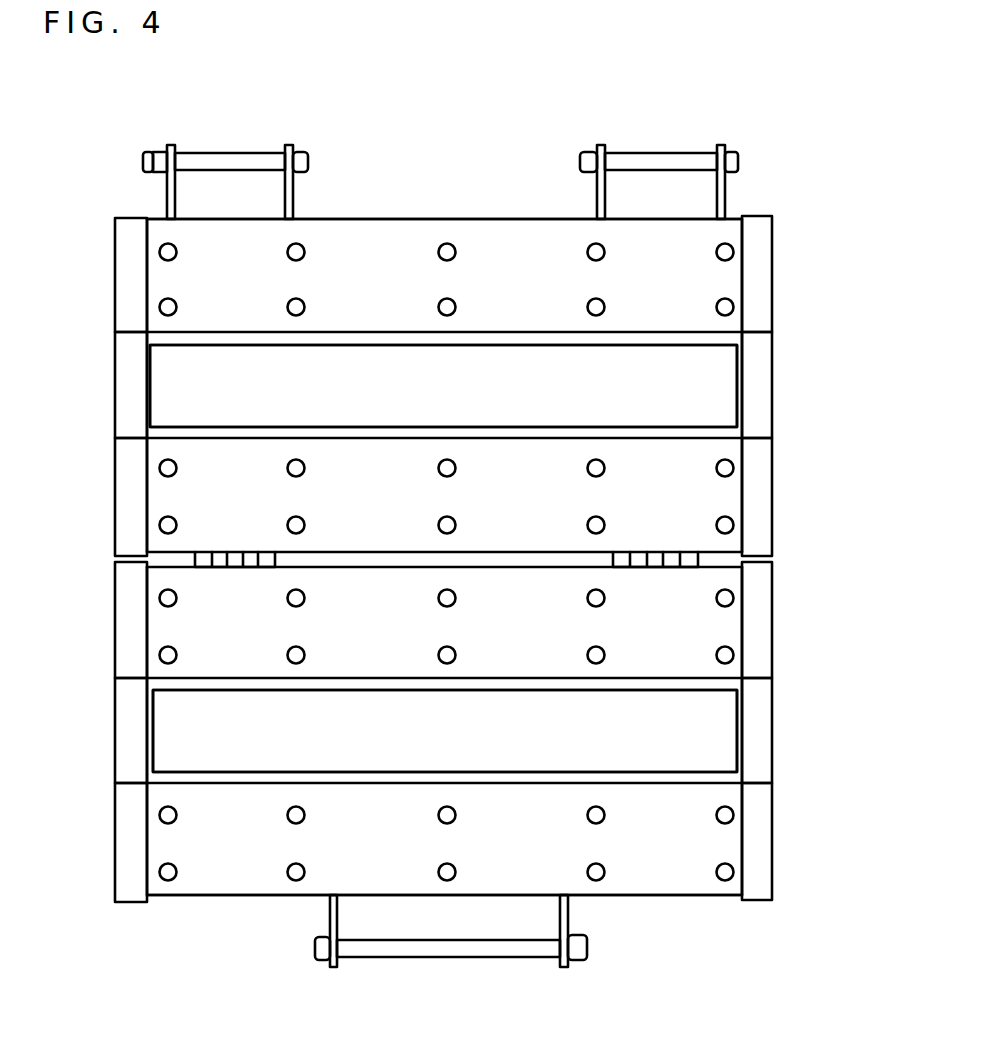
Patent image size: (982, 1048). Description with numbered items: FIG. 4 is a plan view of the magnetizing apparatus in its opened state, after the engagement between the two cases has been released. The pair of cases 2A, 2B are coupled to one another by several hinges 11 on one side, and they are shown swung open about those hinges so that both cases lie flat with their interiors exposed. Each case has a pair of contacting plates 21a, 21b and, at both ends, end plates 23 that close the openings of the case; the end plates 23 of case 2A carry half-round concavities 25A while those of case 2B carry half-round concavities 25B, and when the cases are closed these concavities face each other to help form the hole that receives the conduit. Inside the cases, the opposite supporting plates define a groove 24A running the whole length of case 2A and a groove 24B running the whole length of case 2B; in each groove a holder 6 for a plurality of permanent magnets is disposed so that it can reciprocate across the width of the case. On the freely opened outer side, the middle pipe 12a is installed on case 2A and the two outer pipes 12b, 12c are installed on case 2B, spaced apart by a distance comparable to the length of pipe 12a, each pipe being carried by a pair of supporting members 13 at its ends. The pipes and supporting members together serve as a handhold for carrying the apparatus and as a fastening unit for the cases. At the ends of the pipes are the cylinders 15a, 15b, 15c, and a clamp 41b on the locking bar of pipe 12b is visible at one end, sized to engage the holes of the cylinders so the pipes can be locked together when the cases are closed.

The case 2A is at (228, 917).
The case 2B is at (429, 209).
The holder 6 is at (690, 392).
The hinge 11 is at (235, 557).
The middle pipe 12a is at (458, 957).
The pipe 12b is at (228, 155).
The pipe 12c is at (657, 155).
The supporting member 13 is at (167, 198).
The cylinder 15a is at (322, 960).
The cylinder 15b is at (158, 151).
The cylinder 15c is at (587, 151).
The contacting plate 21a is at (690, 280).
The contacting plate 21b is at (692, 492).
The end plate 23 is at (115, 256).
The groove 24A is at (668, 678).
The groove 24B is at (632, 333).
The half-round concavity 25A is at (135, 679).
The half-round concavity 25B is at (128, 333).
The clamp 41b is at (143, 158).